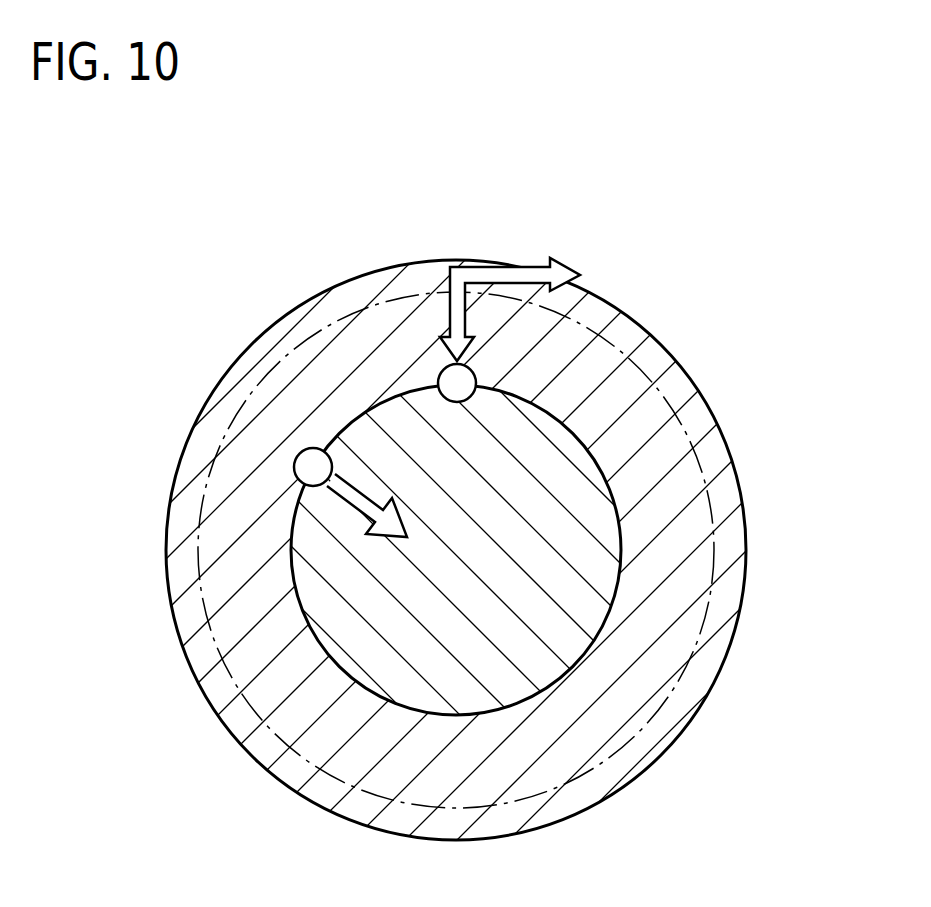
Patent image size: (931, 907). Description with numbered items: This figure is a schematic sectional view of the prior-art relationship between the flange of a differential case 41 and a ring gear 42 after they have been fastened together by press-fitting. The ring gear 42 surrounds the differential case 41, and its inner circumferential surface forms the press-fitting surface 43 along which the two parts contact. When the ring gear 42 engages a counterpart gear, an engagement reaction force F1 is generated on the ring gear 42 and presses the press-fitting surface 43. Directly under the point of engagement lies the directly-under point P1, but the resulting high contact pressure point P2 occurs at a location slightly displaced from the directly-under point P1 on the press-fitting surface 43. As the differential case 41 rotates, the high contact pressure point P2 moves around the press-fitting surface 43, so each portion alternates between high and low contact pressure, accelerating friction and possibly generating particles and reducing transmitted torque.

The differential case 41 is at (517, 695).
The ring gear 42 is at (352, 802).
The press-fitting surface 43 is at (547, 415).
The directly-under point P1 is at (443, 372).
The high contact pressure point P2 is at (300, 452).
The engagement reaction force F1 is at (497, 275).